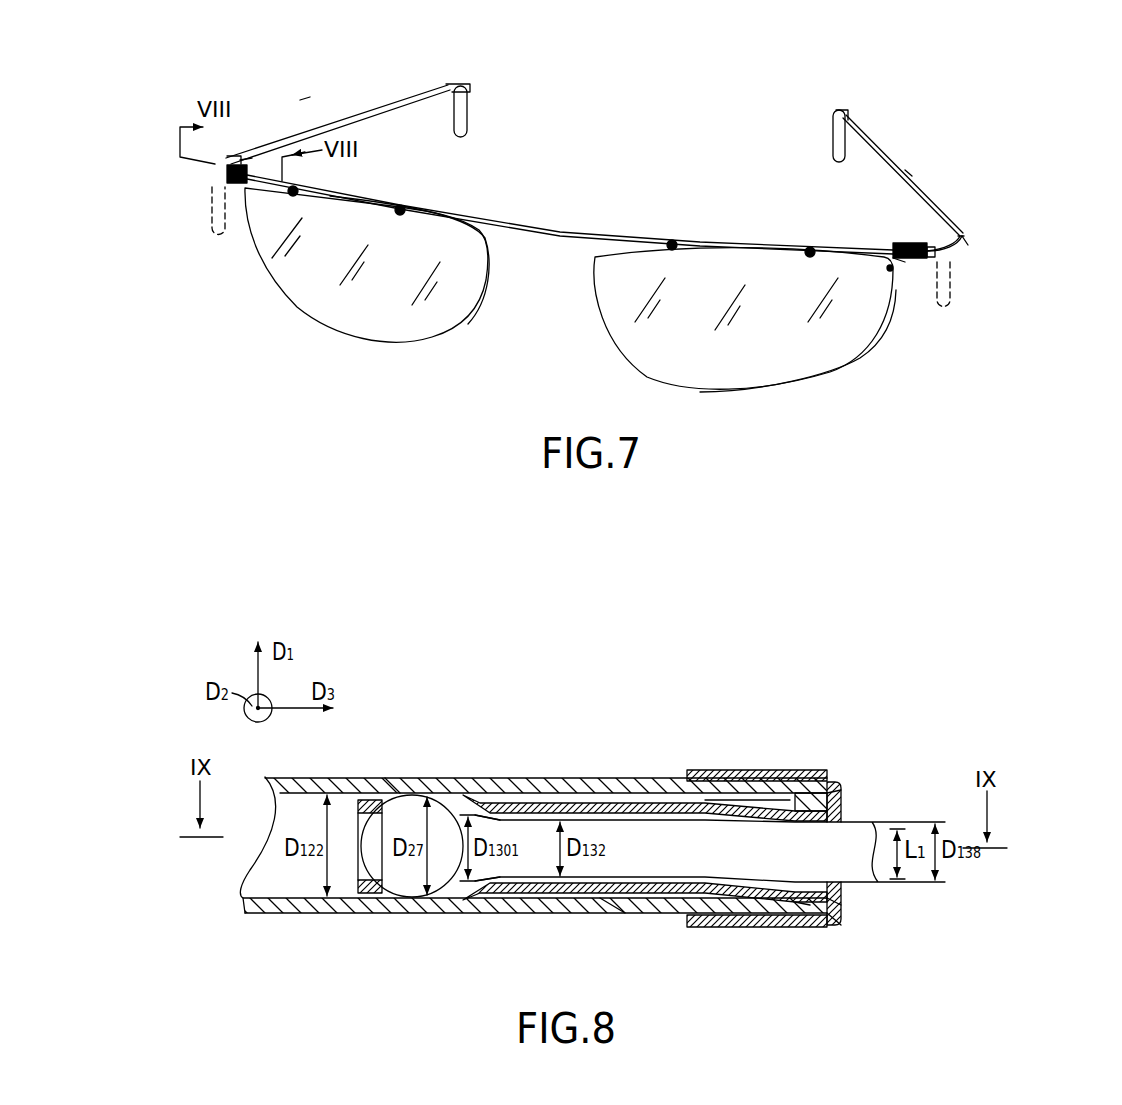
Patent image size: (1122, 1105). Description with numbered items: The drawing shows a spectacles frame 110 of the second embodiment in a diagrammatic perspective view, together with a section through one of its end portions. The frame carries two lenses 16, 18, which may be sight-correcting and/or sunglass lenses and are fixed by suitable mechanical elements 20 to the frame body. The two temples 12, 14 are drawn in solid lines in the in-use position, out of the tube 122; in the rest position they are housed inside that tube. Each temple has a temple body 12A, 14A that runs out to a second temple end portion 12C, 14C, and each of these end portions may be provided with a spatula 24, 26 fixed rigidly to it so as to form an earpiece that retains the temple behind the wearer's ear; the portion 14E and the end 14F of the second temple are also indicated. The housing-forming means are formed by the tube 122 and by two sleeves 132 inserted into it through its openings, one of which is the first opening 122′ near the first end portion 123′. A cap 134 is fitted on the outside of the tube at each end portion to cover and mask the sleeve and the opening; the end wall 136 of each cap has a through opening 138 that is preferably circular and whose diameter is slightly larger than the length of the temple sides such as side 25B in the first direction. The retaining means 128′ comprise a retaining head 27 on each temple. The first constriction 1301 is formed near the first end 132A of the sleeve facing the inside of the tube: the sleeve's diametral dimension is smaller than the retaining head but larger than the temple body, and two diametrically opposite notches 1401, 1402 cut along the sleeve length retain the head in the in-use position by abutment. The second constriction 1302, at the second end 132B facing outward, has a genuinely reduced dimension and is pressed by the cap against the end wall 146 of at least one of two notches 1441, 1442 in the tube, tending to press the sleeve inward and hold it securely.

In FIG. 7, the eyeglasses 110 is at (655, 83).
In FIG. 7, the temple 12 is at (320, 112).
In FIG. 8, the temple 12 is at (614, 903).
In FIG. 7, the temple body 12A is at (352, 114).
In FIG. 8, the temple body 12A is at (679, 850).
In FIG. 7, the second temple end portion 12C is at (440, 92).
In FIG. 7, the spatula 24 is at (470, 86).
In FIG. 7, the first end portion 123′ is at (246, 157).
In FIG. 8, the first end portion 123′ is at (833, 783).
In FIG. 7, the first opening 122′ is at (226, 178).
In FIG. 8, the first opening 122′ is at (828, 927).
In FIG. 7, the cap 134 is at (236, 192).
In FIG. 8, the cap 134 is at (802, 914).
In FIG. 7, the lens 16 is at (338, 324).
In FIG. 7, the mechanical elements 20 is at (404, 204).
In FIG. 7, the tube 122 is at (545, 228).
In FIG. 8, the tube 122 is at (650, 778).
In FIG. 7, the lens 18 is at (713, 385).
In FIG. 7, the spatula 26 is at (832, 112).
In FIG. 7, the second temple end portion 14C is at (856, 122).
In FIG. 7, the temple 14 is at (900, 152).
In FIG. 7, the temple body 14A is at (903, 180).
In FIG. 7, the temple bend 14E is at (960, 228).
In FIG. 7, the temple end 14F is at (964, 246).
In FIG. 8, the retaining means 128′ is at (488, 702).
In FIG. 8, the notch 1401 is at (372, 800).
In FIG. 8, the notch 1402 is at (370, 893).
In FIG. 8, the first end of the sleeve 132A is at (393, 780).
In FIG. 8, the first constriction 1301 is at (480, 803).
In FIG. 8, the sleeve 132 is at (592, 803).
In FIG. 8, the end wall 146 is at (790, 770).
In FIG. 8, the notch 1441 is at (798, 770).
In FIG. 8, the notch 1442 is at (786, 927).
In FIG. 8, the second end of the sleeve 132B is at (812, 770).
In FIG. 8, the second constriction 1302 is at (841, 784).
In FIG. 8, the opening 138 is at (858, 888).
In FIG. 8, the end wall 136 is at (836, 926).
In FIG. 8, the retaining head 27 is at (406, 886).
In FIG. 8, the side 25B is at (794, 850).